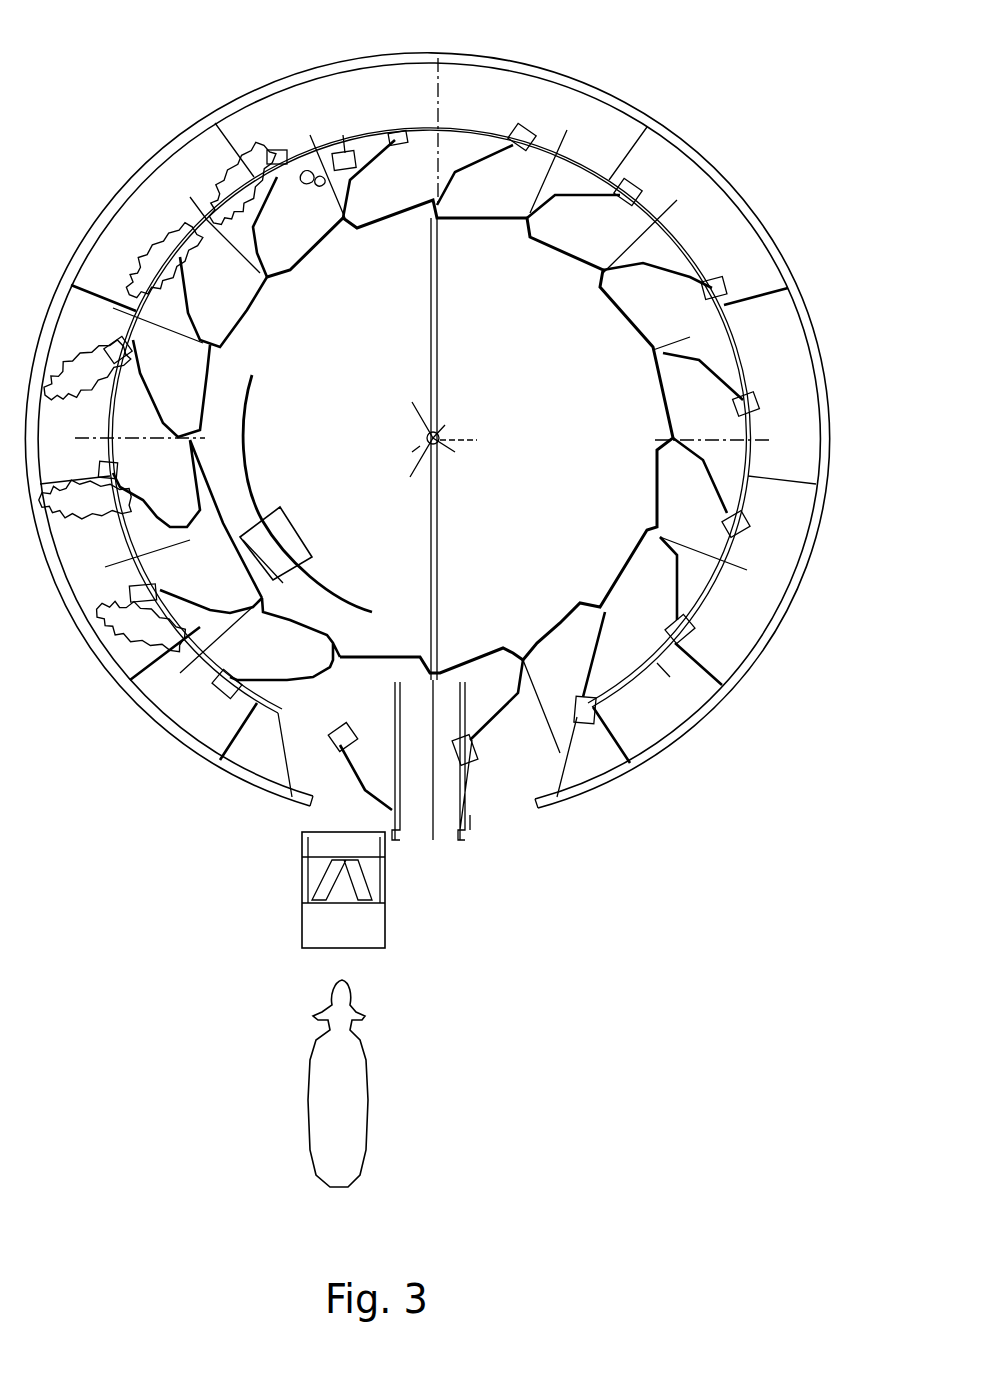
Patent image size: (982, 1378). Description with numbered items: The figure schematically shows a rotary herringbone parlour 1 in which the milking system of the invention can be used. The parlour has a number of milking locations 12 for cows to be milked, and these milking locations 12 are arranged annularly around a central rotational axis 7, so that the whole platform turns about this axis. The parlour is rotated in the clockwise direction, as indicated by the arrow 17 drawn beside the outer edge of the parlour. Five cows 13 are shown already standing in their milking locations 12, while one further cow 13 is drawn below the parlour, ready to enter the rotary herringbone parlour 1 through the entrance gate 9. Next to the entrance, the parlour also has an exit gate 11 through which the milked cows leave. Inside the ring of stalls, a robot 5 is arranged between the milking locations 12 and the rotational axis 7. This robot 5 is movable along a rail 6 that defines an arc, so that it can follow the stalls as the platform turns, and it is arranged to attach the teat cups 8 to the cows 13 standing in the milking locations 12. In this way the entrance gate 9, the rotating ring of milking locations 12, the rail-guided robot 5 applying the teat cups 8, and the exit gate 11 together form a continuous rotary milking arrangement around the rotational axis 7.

The rotary herringbone parlour 1 is at (630, 852).
The robot 5 is at (300, 535).
The rail 6 is at (256, 445).
The rotational axis 7 is at (440, 433).
The teat cups 8 is at (305, 170).
The entrance gate 9 is at (300, 830).
The exit gate 11 is at (505, 820).
The milking locations 12 is at (428, 466).
The cows 13 is at (201, 661).
The arrow 17 is at (128, 738).